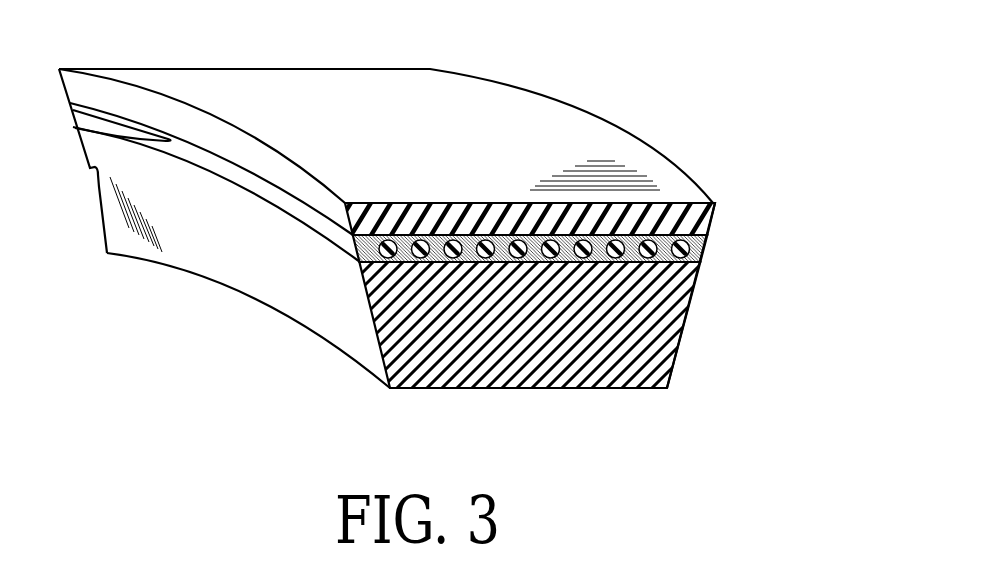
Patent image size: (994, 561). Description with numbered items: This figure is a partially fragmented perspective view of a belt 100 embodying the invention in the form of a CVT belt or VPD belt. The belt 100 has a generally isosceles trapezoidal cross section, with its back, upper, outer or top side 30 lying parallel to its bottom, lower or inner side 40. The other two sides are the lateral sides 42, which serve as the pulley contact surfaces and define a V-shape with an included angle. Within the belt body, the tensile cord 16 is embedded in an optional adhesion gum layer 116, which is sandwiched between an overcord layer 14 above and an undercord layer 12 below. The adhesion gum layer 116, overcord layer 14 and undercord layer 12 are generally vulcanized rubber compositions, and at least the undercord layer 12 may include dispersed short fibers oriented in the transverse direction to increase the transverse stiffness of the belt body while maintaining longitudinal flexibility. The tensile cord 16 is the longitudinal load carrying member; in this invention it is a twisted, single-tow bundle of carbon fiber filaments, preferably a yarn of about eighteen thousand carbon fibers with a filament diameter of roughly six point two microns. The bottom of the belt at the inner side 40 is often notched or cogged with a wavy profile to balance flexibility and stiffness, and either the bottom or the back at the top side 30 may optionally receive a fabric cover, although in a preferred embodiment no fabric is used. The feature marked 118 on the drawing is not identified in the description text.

The belt 100 is at (720, 115).
The top side 30 is at (493, 103).
The overcord layer 14 is at (688, 215).
The adhesion gum layer 116 is at (692, 253).
The tensile cord 16 is at (687, 253).
The lateral sides 42 is at (333, 325).
The undercord layer 12 is at (663, 345).
The bottom side 40 is at (623, 390).
The recess / notch in top layer 118 is at (87, 120).